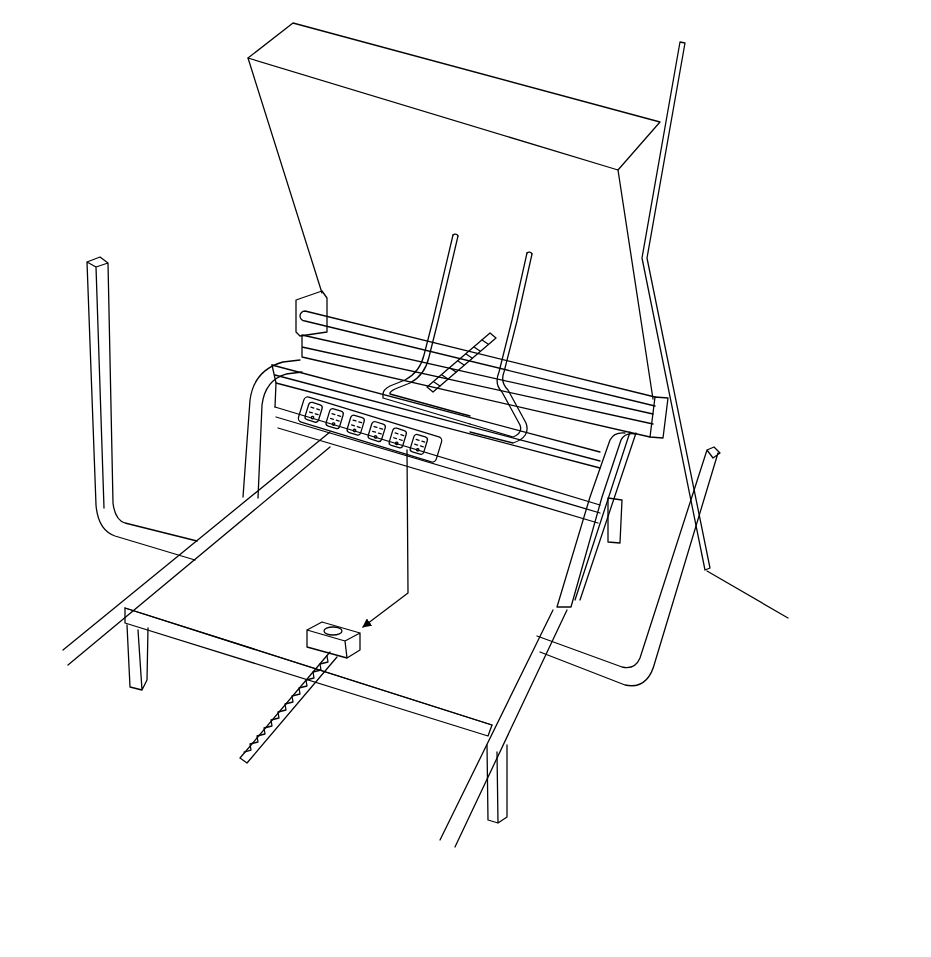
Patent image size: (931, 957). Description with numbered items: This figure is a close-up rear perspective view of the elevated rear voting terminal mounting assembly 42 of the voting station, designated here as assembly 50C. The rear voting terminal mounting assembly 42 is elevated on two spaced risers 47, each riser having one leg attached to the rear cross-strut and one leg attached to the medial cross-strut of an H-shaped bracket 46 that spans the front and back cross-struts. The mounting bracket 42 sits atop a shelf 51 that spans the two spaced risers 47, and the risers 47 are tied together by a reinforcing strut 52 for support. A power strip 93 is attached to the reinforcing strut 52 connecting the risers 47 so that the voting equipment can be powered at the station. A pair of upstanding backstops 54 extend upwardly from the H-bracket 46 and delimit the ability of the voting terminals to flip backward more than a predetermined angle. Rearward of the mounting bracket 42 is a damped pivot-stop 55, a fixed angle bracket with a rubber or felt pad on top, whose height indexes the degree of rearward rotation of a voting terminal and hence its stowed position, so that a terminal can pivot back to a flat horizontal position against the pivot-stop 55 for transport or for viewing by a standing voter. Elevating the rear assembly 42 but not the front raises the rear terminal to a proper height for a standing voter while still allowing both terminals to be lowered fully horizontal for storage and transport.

The workstation 50C is at (736, 329).
The rear voting terminal mounting assembly 42 is at (262, 355).
The H-shaped bracket 46 is at (213, 627).
The riser 47 is at (248, 420).
The shelf 51 is at (487, 548).
The reinforcing strut 52 is at (486, 446).
The upstanding backstop 54 is at (112, 465).
The pivot-stop 55 is at (308, 666).
The power strip 93 is at (357, 436).